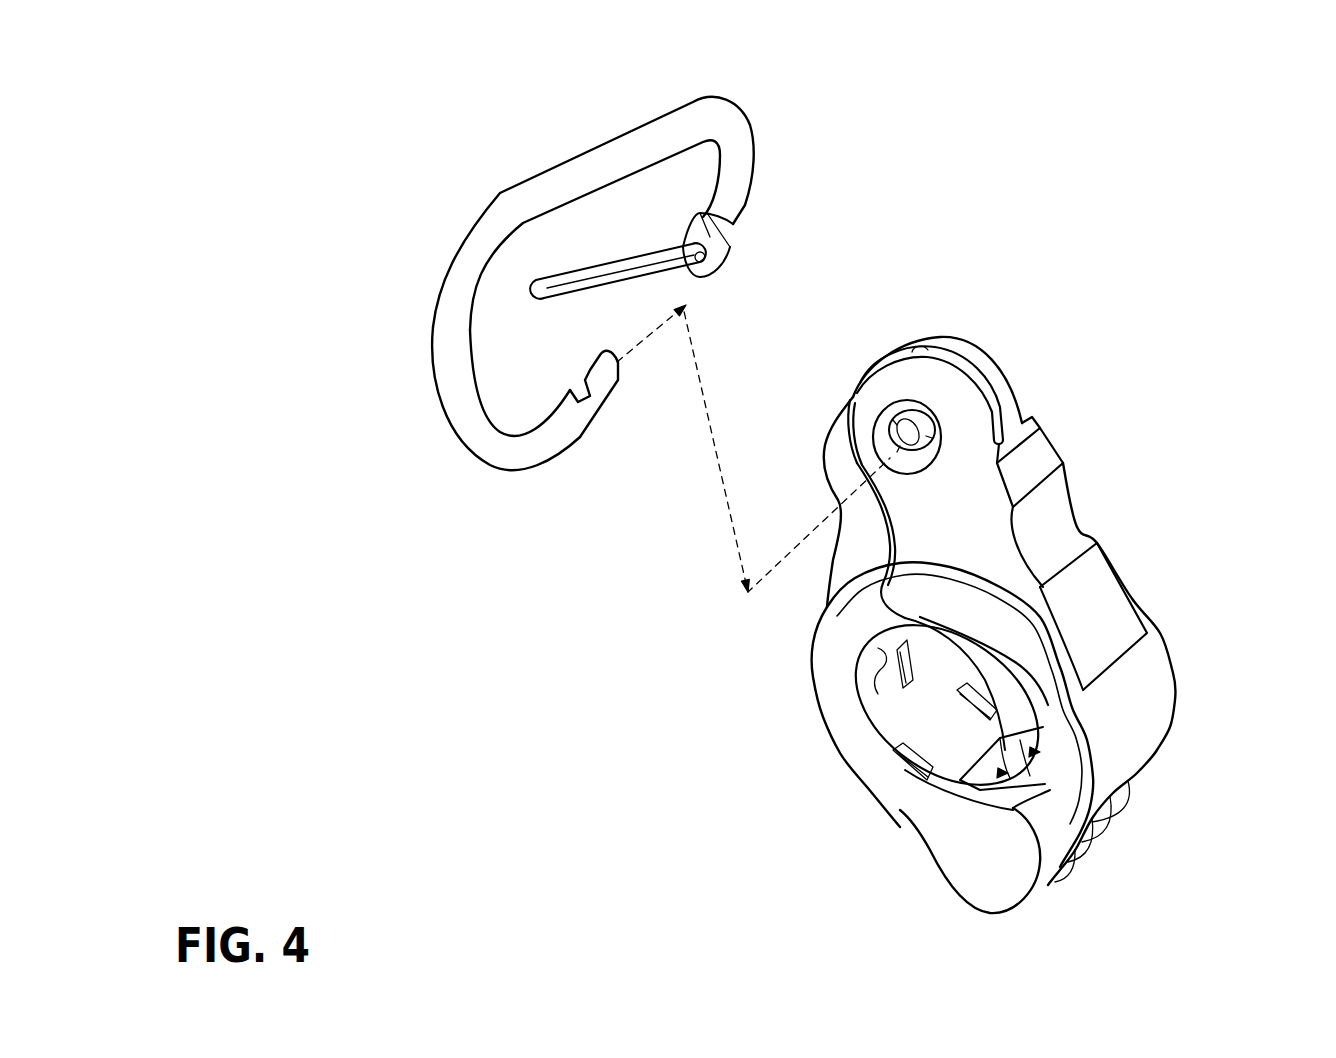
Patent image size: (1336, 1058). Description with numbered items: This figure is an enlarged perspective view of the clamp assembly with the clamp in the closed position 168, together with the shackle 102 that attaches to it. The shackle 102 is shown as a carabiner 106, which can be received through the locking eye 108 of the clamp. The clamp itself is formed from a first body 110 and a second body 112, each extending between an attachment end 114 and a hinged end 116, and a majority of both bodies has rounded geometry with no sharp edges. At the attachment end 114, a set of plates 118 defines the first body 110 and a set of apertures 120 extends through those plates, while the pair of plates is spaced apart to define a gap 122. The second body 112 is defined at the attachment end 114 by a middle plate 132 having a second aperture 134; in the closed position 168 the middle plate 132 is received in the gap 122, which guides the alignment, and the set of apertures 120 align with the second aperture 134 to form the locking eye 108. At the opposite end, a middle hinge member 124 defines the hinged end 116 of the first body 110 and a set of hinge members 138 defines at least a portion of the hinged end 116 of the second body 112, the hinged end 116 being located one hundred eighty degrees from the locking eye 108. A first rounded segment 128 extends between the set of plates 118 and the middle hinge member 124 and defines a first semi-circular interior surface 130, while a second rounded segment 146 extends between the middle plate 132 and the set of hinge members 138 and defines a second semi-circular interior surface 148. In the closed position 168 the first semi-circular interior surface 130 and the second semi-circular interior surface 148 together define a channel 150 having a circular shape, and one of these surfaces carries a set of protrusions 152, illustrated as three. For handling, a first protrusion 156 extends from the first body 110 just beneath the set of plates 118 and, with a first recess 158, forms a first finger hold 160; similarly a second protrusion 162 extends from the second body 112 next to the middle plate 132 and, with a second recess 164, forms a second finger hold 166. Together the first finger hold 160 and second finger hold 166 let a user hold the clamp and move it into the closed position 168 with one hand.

The shackle 102 is at (776, 134).
The carabiner 106 is at (663, 145).
The locking eye 108 is at (948, 407).
The first body 110 is at (1107, 617).
The second body 112 is at (840, 673).
The attachment end 114 is at (934, 330).
The hinged end 116 is at (953, 914).
The set of plates 118 is at (933, 343).
The set of apertures 120 is at (880, 432).
The gap 122 is at (980, 374).
The middle hinge member 124 is at (960, 780).
The first rounded segment 128 is at (1067, 738).
The first semi-circular interior surface 130 is at (1020, 780).
The middle plate 132 is at (950, 395).
The second aperture 134 is at (854, 372).
The set of hinge members 138 is at (1008, 878).
The second rounded segment 146 is at (860, 723).
The second semi-circular interior surface 148 is at (878, 665).
The channel 150 is at (963, 726).
The set of protrusions 152 is at (897, 765).
The first protrusion 156 is at (1043, 448).
The first recess 158 is at (1013, 523).
The first finger hold 160 is at (1040, 500).
The second protrusion 162 is at (823, 447).
The second recess 164 is at (747, 600).
The second finger hold 166 is at (820, 500).
The closed position 168 is at (830, 393).